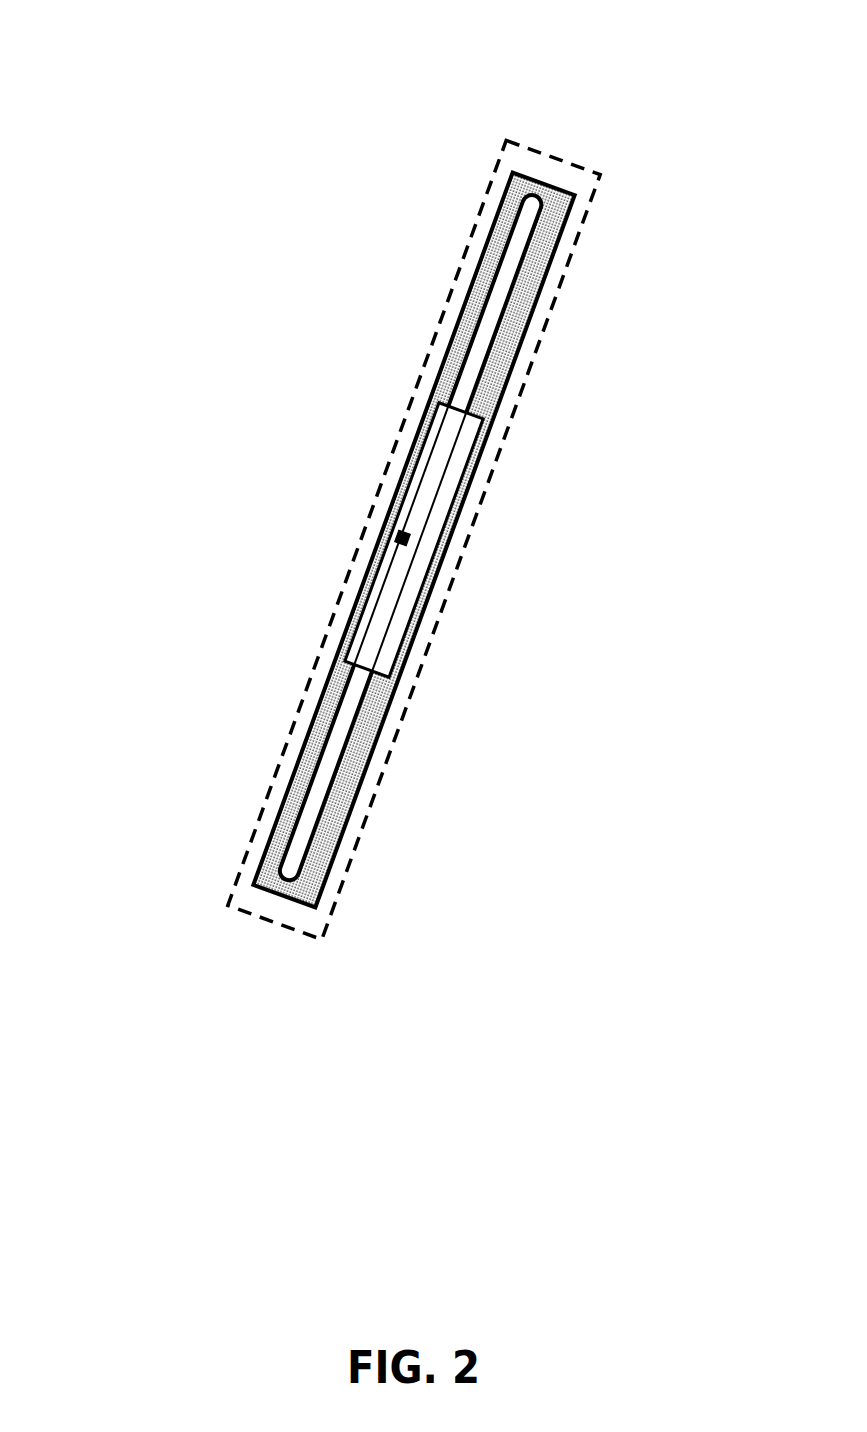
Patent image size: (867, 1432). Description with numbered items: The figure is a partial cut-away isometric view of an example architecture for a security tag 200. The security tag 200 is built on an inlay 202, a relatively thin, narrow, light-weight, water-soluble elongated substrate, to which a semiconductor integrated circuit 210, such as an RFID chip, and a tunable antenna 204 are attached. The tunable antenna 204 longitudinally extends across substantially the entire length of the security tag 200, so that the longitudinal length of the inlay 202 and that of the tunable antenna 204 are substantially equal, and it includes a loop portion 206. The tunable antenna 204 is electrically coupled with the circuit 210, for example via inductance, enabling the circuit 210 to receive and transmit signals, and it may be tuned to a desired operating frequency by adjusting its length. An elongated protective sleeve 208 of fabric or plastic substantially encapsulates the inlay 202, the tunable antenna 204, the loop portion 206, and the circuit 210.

The security tag 200 is at (80, 59).
The inlay 202 is at (524, 334).
The tunable antenna 204 is at (507, 240).
The loop portion 206 is at (436, 532).
The protective sleeve 208 is at (334, 904).
The semiconductor integrated circuit 210 is at (382, 531).